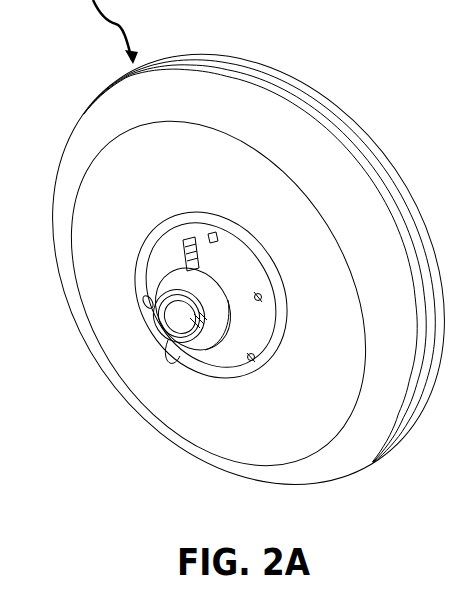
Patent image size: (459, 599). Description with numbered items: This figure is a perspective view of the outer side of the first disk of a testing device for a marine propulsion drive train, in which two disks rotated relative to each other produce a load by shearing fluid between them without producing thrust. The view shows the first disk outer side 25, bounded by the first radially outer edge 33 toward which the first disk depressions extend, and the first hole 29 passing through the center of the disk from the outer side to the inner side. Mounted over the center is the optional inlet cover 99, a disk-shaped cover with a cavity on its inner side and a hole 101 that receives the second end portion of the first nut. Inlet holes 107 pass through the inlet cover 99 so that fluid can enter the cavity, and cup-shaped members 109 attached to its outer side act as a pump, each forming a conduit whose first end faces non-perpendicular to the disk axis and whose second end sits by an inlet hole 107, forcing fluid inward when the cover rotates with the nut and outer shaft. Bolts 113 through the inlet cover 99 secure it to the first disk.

The first disk outer side 25 is at (120, 160).
The first radially outer edge 33 is at (278, 82).
The inlet holes 107 is at (195, 258).
The cup-shaped members 109 is at (173, 252).
The first hole 29 is at (196, 314).
The hole 101 is at (173, 323).
The inlet cover 99 is at (178, 354).
The bolts 113 is at (258, 295).